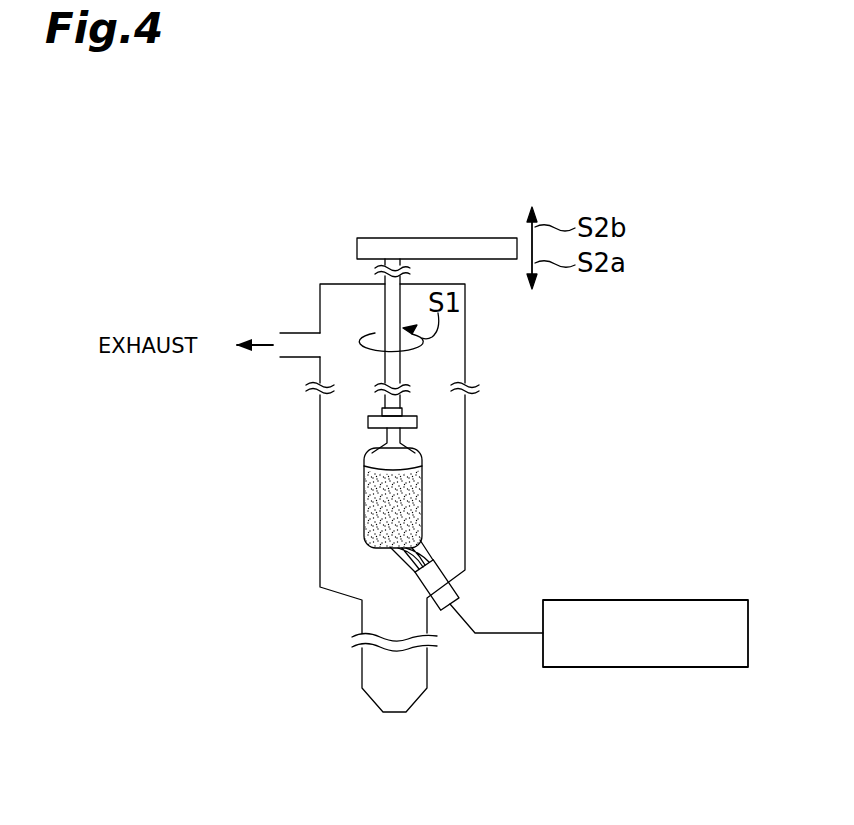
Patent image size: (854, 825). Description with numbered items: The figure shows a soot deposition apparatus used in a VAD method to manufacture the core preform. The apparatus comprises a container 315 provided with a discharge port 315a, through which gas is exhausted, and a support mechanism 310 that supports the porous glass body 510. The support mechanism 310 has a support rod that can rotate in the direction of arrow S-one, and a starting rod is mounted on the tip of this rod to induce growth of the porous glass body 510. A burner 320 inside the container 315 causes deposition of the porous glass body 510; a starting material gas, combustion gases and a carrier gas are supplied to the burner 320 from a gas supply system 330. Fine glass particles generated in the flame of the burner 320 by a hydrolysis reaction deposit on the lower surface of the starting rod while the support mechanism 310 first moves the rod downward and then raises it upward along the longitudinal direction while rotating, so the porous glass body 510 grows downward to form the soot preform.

The support mechanism 310 is at (432, 247).
The container 315 is at (465, 347).
The discharge port 315a is at (297, 333).
The burner 320 is at (458, 587).
The gas supply system 330 is at (700, 600).
The porous glass body 510 is at (422, 496).